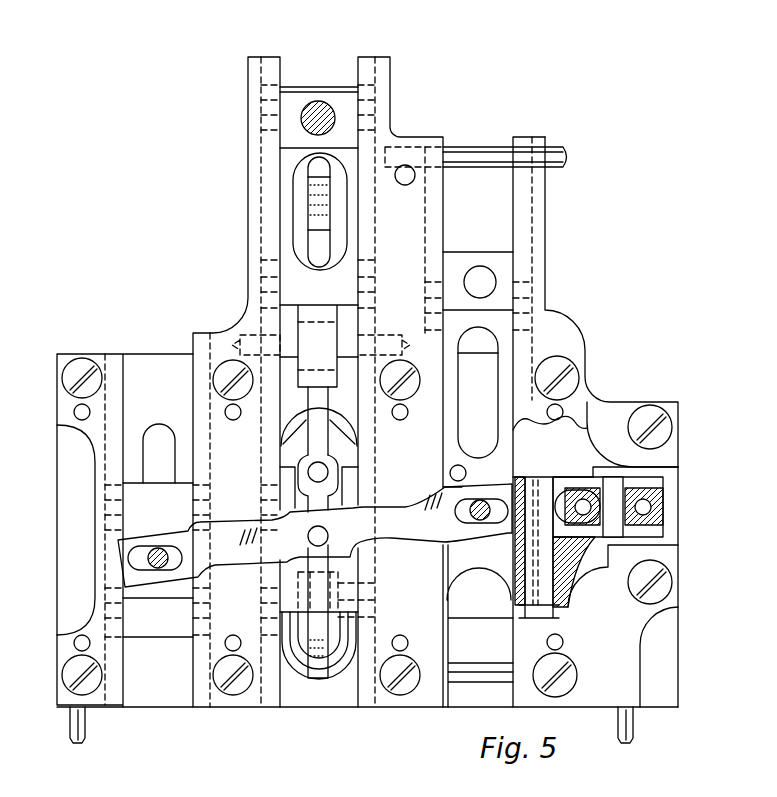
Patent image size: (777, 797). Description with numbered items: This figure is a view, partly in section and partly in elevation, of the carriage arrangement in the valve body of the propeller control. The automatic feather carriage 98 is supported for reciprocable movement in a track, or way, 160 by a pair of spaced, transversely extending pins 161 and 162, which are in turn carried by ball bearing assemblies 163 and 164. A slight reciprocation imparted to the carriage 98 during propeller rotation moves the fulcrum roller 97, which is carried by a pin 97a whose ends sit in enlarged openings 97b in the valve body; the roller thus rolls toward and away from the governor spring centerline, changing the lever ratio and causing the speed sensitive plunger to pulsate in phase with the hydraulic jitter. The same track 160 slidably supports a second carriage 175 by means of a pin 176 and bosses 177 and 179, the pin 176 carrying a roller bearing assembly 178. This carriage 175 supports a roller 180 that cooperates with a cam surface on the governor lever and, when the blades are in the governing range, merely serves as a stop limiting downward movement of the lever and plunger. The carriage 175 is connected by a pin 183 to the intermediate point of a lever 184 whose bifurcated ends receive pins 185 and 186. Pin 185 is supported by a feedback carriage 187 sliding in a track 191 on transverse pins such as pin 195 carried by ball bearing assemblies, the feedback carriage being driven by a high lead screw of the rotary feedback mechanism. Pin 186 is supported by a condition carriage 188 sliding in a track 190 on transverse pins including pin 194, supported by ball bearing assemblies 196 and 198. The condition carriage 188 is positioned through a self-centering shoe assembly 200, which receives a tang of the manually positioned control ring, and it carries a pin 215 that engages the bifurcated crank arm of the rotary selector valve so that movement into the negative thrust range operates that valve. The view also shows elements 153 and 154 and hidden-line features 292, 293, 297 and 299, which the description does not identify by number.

The fulcrum roller 97 is at (330, 342).
The fulcrum roller pin 97a is at (380, 338).
The enlarged openings 97b is at (418, 334).
The automatic feather carriage 98 is at (292, 193).
The spindle 153 is at (540, 580).
The bearing housing 154 is at (665, 512).
The track 160 is at (268, 63).
The pin 161 is at (262, 108).
The pin 162 is at (270, 282).
The ball bearing assembly 163 is at (376, 92).
The ball bearing assembly 164 is at (374, 268).
The second carriage 175 is at (280, 612).
The pin 176 is at (278, 592).
The boss 177 is at (276, 486).
The roller bearing assembly 178 is at (278, 578).
The boss 179 is at (372, 484).
The roller 180 is at (414, 600).
The pin 183 is at (308, 538).
The lever 184 is at (375, 520).
The pin 185 is at (158, 548).
The pin 186 is at (498, 474).
The feedback carriage 187 is at (133, 490).
The condition carriage 188 is at (507, 370).
The track 190 is at (525, 138).
The track 191 is at (120, 353).
The pin 194 is at (528, 302).
The pin 195 is at (106, 614).
The ball bearing assembly 196 is at (448, 462).
The ball bearing assembly 198 is at (530, 284).
The self-centering shoe assembly 200 is at (480, 280).
The pin 215 is at (465, 486).
The hidden line 292 is at (432, 470).
The hidden hole 293 is at (121, 514).
The hidden hole 297 is at (105, 487).
The hidden hole 299 is at (106, 585).